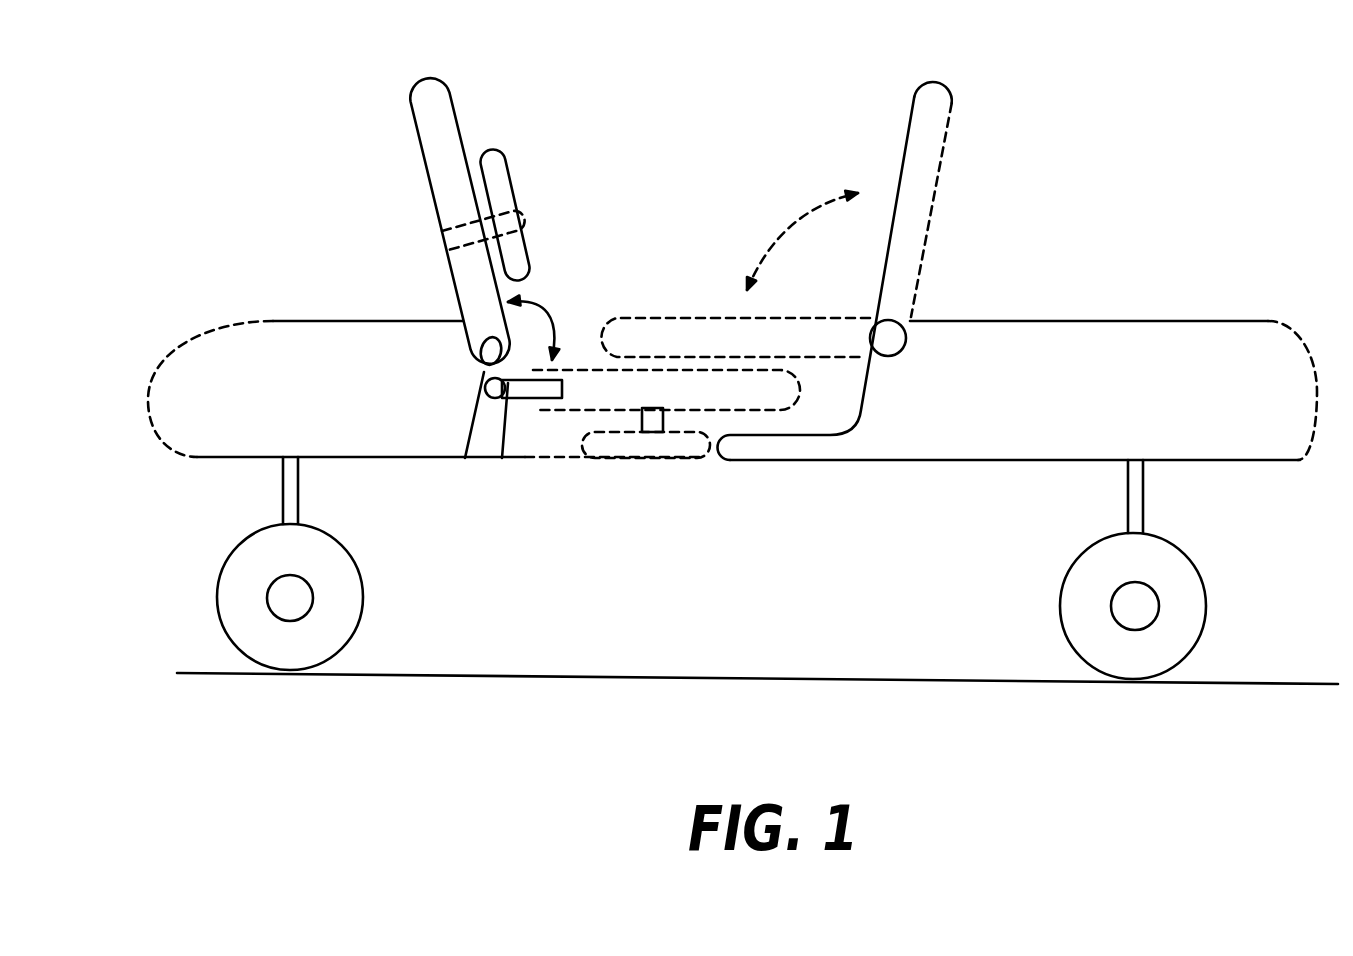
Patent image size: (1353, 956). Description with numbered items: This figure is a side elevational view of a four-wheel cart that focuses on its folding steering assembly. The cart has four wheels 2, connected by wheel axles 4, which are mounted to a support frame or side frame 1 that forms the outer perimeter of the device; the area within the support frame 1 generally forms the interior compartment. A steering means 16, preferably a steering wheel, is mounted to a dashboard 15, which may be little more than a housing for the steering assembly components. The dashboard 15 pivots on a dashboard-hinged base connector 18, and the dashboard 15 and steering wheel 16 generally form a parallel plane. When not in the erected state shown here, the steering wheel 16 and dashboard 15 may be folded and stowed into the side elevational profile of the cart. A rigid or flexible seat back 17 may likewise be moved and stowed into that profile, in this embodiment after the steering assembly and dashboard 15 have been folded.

The support frame/side frame 1 is at (1182, 338).
The wheels 2 is at (218, 603).
The wheel axles 4 is at (298, 492).
The dashboard 15 is at (423, 118).
The steering means 16 is at (500, 167).
The seat back 17 is at (925, 193).
The dashboard-hinged base connector 18 is at (483, 424).